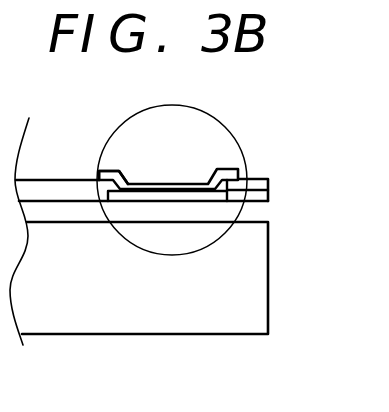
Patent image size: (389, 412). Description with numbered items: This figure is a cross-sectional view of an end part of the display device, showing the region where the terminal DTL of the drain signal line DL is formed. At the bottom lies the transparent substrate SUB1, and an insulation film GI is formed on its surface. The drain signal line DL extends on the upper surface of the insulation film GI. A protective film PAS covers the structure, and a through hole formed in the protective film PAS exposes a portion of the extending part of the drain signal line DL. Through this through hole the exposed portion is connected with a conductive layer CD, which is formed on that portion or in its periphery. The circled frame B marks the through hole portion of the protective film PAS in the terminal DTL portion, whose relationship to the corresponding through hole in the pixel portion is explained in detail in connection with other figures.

The terminal DTL is at (152, 163).
The circled frame B is at (172, 173).
The conductive layer CD is at (183, 182).
The protective film PAS is at (260, 187).
The insulation film GI is at (257, 212).
The transparent substrate SUB1 is at (133, 320).
The drain signal line DL is at (172, 191).